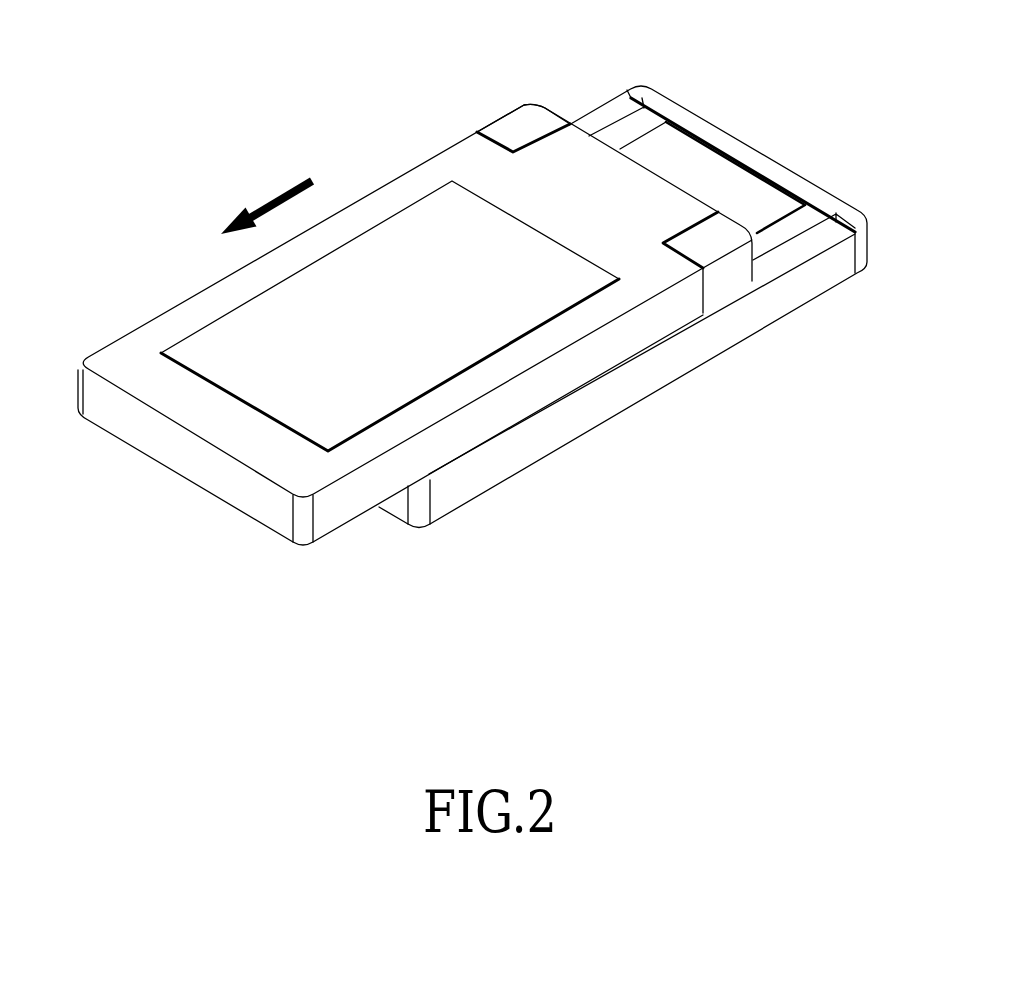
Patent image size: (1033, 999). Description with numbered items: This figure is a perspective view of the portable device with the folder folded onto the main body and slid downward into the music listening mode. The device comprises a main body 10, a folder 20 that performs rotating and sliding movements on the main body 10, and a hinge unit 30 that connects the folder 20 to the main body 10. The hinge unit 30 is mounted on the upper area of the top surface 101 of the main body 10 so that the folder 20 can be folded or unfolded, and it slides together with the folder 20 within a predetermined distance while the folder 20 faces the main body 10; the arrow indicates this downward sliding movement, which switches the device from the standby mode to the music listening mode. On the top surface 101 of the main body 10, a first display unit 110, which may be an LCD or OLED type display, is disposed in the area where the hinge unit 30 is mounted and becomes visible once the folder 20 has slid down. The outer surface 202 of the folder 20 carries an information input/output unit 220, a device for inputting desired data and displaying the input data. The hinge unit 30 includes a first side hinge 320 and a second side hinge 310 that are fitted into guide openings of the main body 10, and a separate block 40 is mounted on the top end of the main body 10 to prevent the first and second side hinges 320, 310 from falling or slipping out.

The main body 10 is at (603, 424).
The folder 20 is at (383, 321).
The hinge unit 30 is at (502, 102).
The block 40 is at (787, 173).
The top surface 101 is at (771, 238).
The first display unit 110 is at (688, 148).
The front surface of sliding body 202 is at (139, 363).
The information input/output unit 220 is at (234, 343).
The second side hinge 310 is at (725, 282).
The first side hinge 320 is at (536, 103).